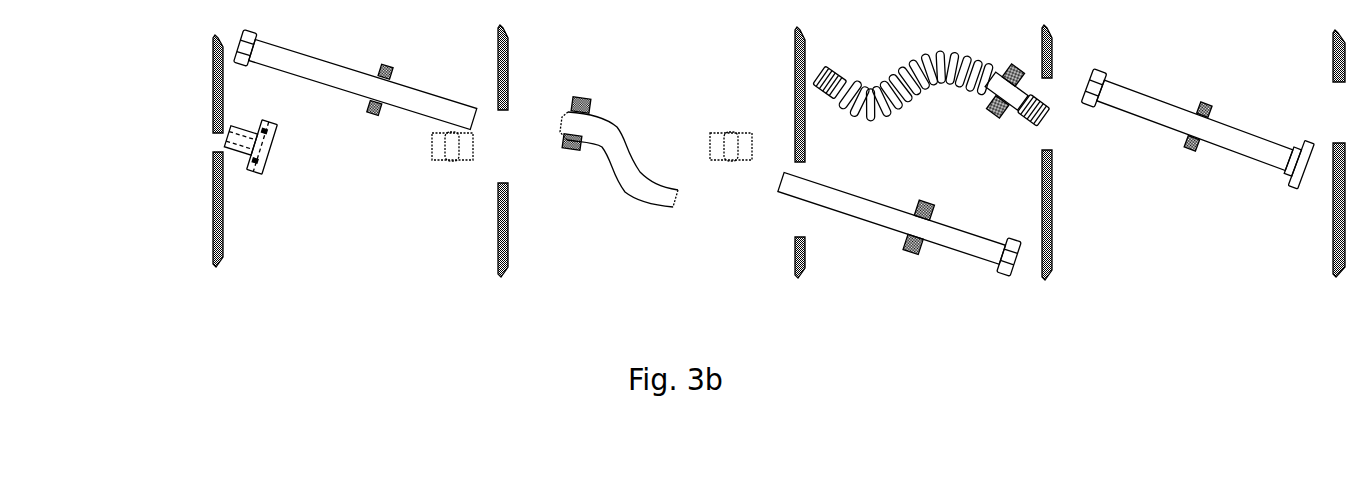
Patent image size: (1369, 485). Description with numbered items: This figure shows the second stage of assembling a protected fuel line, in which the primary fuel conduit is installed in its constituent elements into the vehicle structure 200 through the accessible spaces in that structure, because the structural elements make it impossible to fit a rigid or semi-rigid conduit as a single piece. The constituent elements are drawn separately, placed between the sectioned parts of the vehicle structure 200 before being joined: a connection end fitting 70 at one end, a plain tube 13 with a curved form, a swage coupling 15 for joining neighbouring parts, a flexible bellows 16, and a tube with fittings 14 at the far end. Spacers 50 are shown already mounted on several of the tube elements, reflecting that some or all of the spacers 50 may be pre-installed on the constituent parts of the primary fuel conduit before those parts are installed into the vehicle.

The vehicle structure 200 is at (182, 80).
The connection end fitting 70 is at (277, 162).
The plain tube 13 is at (643, 187).
The swage coupling 15 is at (732, 146).
The bellows 16 is at (917, 57).
The tube with fittings 14 is at (1265, 152).
The spacer 50 is at (1205, 102).